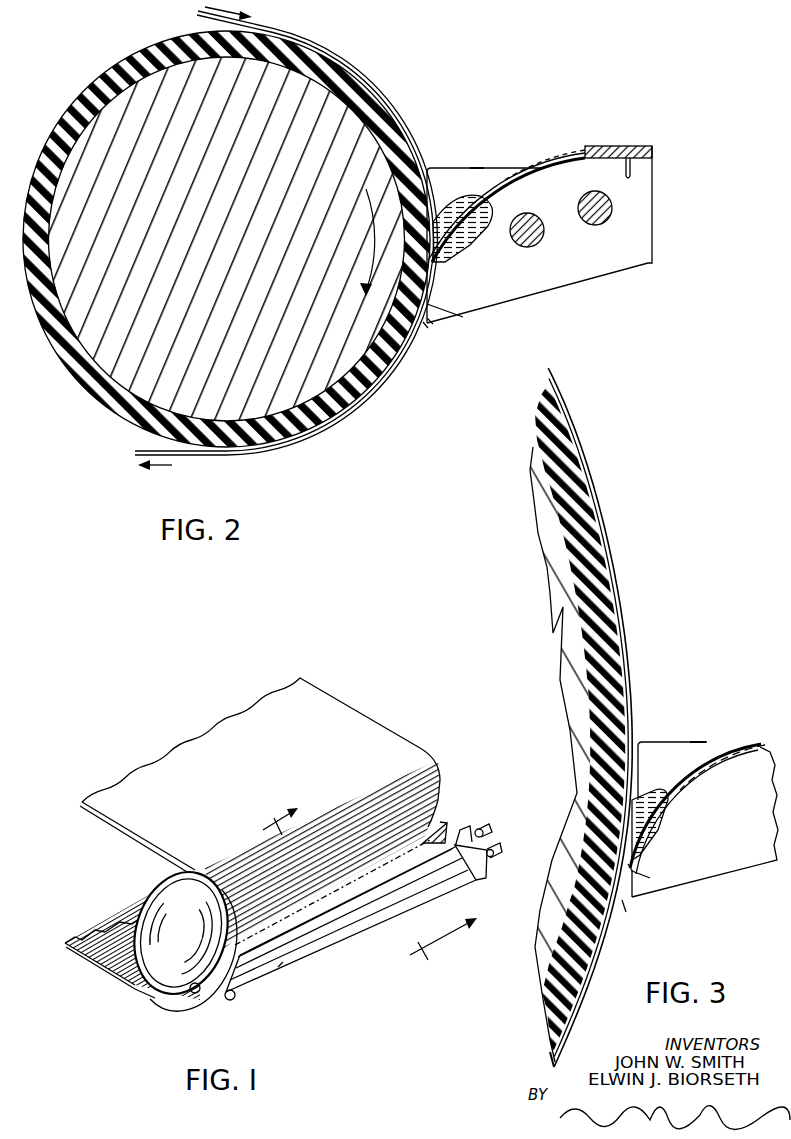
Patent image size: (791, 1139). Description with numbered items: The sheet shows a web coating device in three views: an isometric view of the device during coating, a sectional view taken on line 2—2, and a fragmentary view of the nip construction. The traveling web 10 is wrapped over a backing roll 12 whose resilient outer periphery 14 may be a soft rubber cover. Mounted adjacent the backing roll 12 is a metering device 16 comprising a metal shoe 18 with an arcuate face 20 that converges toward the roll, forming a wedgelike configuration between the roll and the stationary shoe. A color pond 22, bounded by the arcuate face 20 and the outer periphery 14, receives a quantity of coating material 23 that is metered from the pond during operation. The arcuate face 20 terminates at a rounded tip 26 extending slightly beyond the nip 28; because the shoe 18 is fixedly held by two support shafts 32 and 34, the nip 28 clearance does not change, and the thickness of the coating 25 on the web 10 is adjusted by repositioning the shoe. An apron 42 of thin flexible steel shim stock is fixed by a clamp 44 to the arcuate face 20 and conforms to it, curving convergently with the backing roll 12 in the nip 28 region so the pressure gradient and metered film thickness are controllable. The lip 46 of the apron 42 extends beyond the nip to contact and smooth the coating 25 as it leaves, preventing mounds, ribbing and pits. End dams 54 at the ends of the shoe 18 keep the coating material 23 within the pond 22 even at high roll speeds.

In FIG. 1, the section line 2— 2 is at (383, 879).
In FIG. 2, the traveling web 10 is at (338, 62).
In FIG. 3, the traveling web 10 is at (587, 477).
In FIG. 1, the traveling web 10 is at (325, 708).
In FIG. 2, the backing roll 12 is at (350, 135).
In FIG. 3, the backing roll 12 is at (533, 448).
In FIG. 1, the backing roll 12 is at (170, 930).
In FIG. 2, the resilient outer periphery 14 is at (400, 104).
In FIG. 3, the resilient outer periphery 14 is at (620, 603).
In FIG. 1, the resilient outer periphery 14 is at (158, 997).
In FIG. 2, the metering device 16 is at (662, 200).
In FIG. 3, the metering device 16 is at (775, 758).
In FIG. 1, the metering device 16 is at (384, 934).
In FIG. 2, the metal shoe 18 is at (640, 258).
In FIG. 3, the metal shoe 18 is at (717, 860).
In FIG. 1, the metal shoe 18 is at (320, 950).
In FIG. 2, the arcuate face 20 is at (557, 165).
In FIG. 3, the arcuate face 20 is at (757, 743).
In FIG. 1, the arcuate face 20 is at (433, 850).
In FIG. 2, the color pond 22 is at (490, 177).
In FIG. 3, the color pond 22 is at (668, 750).
In FIG. 1, the color pond 22 is at (440, 820).
In FIG. 2, the coating material 23 is at (455, 217).
In FIG. 3, the coating material 23 is at (640, 810).
In FIG. 1, the coating material 23 is at (375, 870).
In FIG. 2, the coating 25 is at (338, 423).
In FIG. 3, the coating 25 is at (568, 1045).
In FIG. 1, the coating 25 is at (117, 973).
In FIG. 2, the rounded tip 26 is at (430, 324).
In FIG. 3, the rounded tip 26 is at (628, 868).
In FIG. 2, the nip 28 is at (463, 317).
In FIG. 3, the nip 28 is at (650, 878).
In FIG. 2, the support shaft 32 is at (597, 226).
In FIG. 1, the support shaft 32 is at (501, 846).
In FIG. 2, the support shaft 34 is at (528, 247).
In FIG. 1, the support shaft 34 is at (482, 829).
In FIG. 2, the apron 42 is at (535, 168).
In FIG. 3, the apron 42 is at (710, 765).
In FIG. 2, the clamp 44 is at (610, 146).
In FIG. 1, the clamp 44 is at (420, 882).
In FIG. 2, the lip 46 is at (424, 328).
In FIG. 3, the lip 46 is at (622, 905).
In FIG. 2, the end dam 54 is at (477, 167).
In FIG. 3, the end dam 54 is at (698, 740).
In FIG. 1, the end dam 54 is at (463, 823).